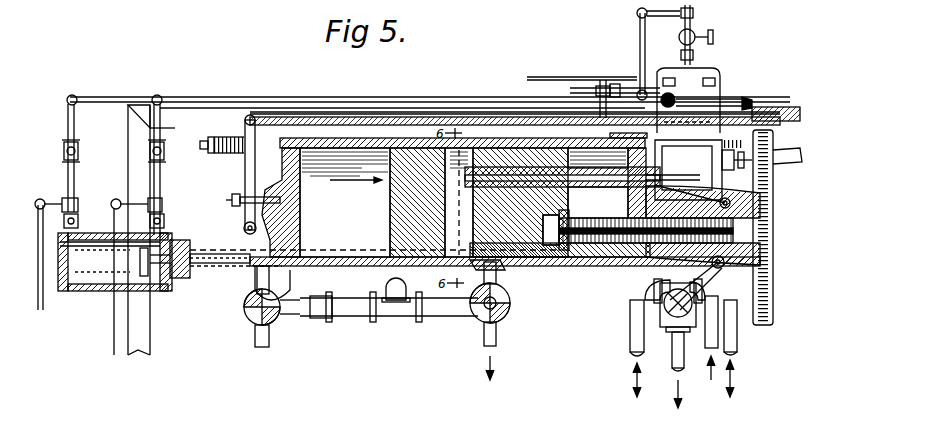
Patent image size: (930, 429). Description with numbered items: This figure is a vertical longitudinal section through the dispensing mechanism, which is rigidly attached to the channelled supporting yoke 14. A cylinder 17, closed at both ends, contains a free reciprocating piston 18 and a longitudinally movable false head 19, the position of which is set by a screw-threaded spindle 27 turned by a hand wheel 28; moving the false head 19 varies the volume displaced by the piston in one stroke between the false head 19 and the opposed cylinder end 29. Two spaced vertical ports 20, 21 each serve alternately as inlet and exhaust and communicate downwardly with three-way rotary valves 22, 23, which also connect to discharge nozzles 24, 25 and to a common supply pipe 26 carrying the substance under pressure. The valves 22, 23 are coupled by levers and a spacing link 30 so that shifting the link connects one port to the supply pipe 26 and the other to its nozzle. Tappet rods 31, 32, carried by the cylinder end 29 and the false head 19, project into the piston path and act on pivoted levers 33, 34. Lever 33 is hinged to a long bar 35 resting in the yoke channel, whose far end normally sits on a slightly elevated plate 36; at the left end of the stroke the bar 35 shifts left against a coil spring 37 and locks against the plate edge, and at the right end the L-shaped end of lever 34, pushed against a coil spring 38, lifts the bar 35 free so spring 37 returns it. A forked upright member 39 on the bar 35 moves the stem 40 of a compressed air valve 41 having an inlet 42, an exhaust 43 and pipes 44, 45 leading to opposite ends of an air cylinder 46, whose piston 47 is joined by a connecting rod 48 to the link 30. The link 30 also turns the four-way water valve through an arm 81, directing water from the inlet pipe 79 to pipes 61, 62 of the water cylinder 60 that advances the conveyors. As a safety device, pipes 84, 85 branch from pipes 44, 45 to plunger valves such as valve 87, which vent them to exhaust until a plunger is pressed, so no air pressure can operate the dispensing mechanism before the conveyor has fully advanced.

The channelled supporting yoke 14 is at (232, 108).
The cylinder 17 is at (357, 116).
The free piston 18 is at (425, 138).
The false cylinder head 19 is at (490, 140).
The port 20 is at (258, 282).
The port 21 is at (498, 286).
The three-way rotary valve 22 is at (248, 312).
The three-way rotary valve 23 is at (504, 310).
The discharge nozzle 24 is at (258, 338).
The discharge nozzle 25 is at (482, 344).
The common supply pipe 26 is at (396, 316).
The screw-threaded spindle 27 is at (583, 222).
The hand wheel 28 is at (768, 195).
The cylinder end 29 is at (284, 170).
The spacing link 30 is at (362, 277).
The tappet rod 31 is at (244, 214).
The tappet rod 32 is at (601, 227).
The pivoted lever 33 is at (240, 176).
The pivoted lever 34 is at (722, 160).
The long bar 35 is at (383, 118).
The elevated plate 36 is at (775, 120).
The coil spring 37 is at (214, 150).
The coil spring 38 is at (737, 157).
The forked upright member 39 is at (610, 86).
The valve operating stem 40 is at (634, 74).
The compressed air valve 41 is at (715, 88).
The compressed air inlet 42 is at (695, 30).
The exhaust 43 is at (735, 110).
The pipe 44 is at (77, 158).
The pipe 45 is at (152, 180).
The air cylinder 46 is at (100, 293).
The piston 47 is at (172, 238).
The connecting rod 48 is at (345, 202).
The water cylinder 60 is at (676, 354).
The pipe 61 is at (738, 335).
The pipe 62 is at (634, 334).
The water inlet pipe 79 is at (662, 282).
The arm 81 is at (731, 283).
The pipe 84 is at (48, 200).
The pipe 85 is at (112, 216).
The plunger valve 87 is at (546, 281).